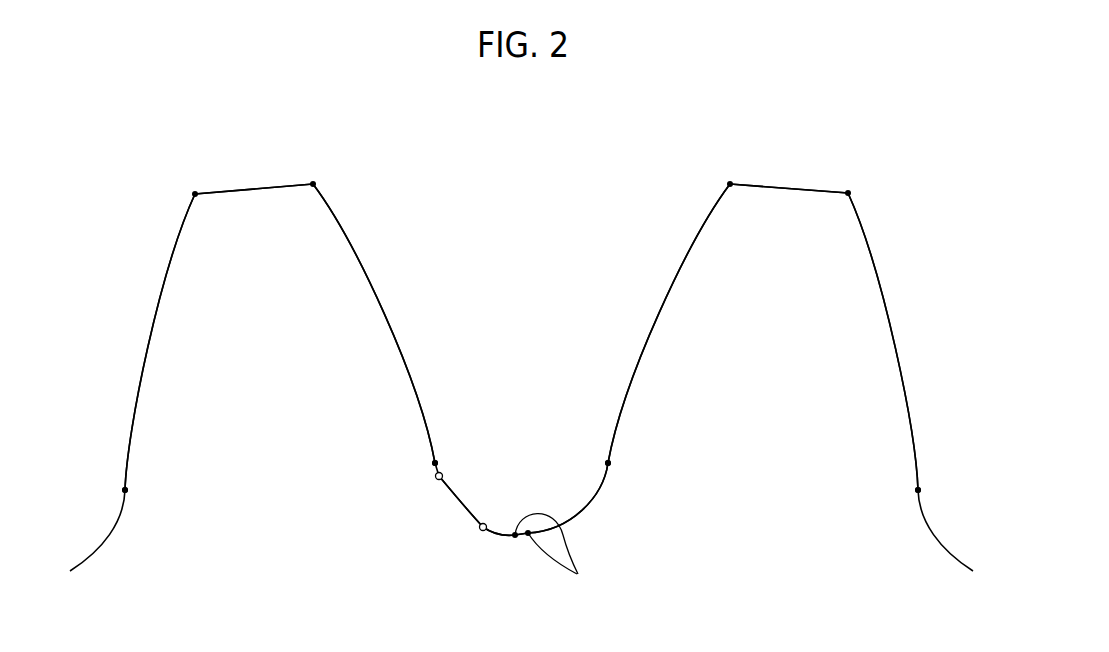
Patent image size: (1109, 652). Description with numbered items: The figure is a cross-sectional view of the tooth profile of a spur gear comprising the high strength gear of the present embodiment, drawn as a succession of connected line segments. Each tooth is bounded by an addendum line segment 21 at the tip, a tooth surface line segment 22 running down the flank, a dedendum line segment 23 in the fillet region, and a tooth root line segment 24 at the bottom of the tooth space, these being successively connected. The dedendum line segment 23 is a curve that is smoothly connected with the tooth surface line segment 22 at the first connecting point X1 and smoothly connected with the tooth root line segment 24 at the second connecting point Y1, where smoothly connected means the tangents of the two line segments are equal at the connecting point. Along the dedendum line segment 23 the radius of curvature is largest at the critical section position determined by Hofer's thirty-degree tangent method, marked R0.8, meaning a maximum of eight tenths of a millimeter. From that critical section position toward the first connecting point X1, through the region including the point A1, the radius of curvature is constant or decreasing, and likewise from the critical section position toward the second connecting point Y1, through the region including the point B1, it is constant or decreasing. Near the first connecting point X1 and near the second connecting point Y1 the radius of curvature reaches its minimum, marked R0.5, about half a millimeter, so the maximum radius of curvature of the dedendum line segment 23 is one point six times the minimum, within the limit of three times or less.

The addendum line segment 21 is at (265, 187).
The tooth surface line segment 22 is at (157, 310).
The dedendum line segment 23 is at (462, 506).
The tooth root line segment 24 is at (527, 540).
The first connecting point X1 is at (127, 490).
The second connecting point Y1 is at (562, 557).
The point A1 is at (437, 480).
The point B1 is at (483, 530).
The minimum radius of curvature R0.5 is at (437, 477).
The maximum radius of curvature R0.8 is at (468, 510).